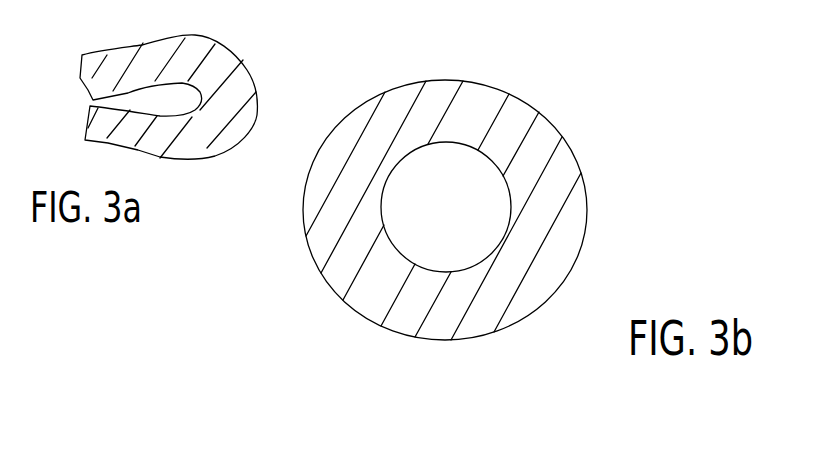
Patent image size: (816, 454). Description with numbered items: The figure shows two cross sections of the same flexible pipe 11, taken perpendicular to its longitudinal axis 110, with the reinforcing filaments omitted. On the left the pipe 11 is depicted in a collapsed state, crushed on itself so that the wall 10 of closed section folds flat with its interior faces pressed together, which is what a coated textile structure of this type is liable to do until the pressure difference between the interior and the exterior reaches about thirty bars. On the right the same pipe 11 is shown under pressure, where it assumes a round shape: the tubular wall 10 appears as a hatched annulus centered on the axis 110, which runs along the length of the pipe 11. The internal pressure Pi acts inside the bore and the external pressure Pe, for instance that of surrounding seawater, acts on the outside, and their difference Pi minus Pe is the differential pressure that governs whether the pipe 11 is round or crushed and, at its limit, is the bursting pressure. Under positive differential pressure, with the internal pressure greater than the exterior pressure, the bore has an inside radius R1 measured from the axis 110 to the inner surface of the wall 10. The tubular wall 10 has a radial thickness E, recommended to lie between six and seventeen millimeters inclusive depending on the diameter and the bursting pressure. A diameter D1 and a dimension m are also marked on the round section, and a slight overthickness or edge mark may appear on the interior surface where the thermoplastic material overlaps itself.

In FIG. 3a, the wall 10 is at (193, 148).
In FIG. 3b, the wall 10 is at (560, 167).
In FIG. 3a, the pipe 11 is at (262, 93).
In FIG. 3b, the pipe 11 is at (530, 127).
In FIG. 3b, the axis 110 is at (445, 210).
In FIG. 3b, the diameter D1 is at (447, 207).
In FIG. 3b, the inside radius R1 is at (446, 207).
In FIG. 3b, the thickness E is at (468, 260).
In FIG. 3b, the distance m is at (393, 162).
In FIG. 3b, the internal pressure Pi is at (463, 210).
In FIG. 3b, the external pressure Pe is at (633, 213).